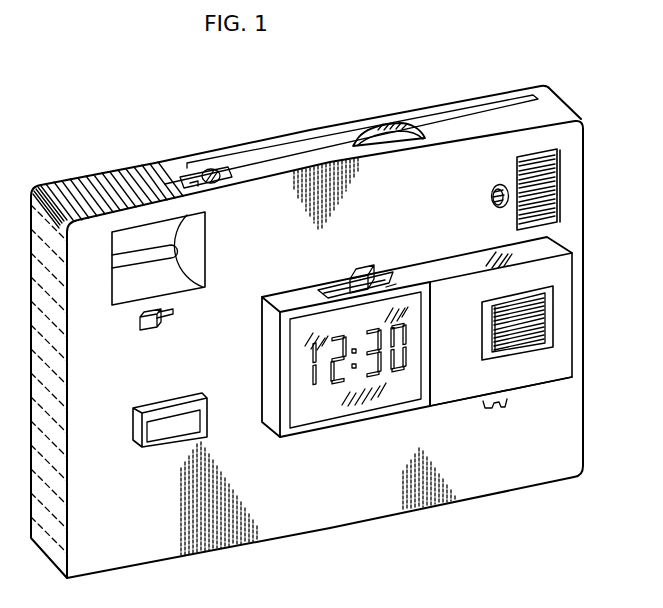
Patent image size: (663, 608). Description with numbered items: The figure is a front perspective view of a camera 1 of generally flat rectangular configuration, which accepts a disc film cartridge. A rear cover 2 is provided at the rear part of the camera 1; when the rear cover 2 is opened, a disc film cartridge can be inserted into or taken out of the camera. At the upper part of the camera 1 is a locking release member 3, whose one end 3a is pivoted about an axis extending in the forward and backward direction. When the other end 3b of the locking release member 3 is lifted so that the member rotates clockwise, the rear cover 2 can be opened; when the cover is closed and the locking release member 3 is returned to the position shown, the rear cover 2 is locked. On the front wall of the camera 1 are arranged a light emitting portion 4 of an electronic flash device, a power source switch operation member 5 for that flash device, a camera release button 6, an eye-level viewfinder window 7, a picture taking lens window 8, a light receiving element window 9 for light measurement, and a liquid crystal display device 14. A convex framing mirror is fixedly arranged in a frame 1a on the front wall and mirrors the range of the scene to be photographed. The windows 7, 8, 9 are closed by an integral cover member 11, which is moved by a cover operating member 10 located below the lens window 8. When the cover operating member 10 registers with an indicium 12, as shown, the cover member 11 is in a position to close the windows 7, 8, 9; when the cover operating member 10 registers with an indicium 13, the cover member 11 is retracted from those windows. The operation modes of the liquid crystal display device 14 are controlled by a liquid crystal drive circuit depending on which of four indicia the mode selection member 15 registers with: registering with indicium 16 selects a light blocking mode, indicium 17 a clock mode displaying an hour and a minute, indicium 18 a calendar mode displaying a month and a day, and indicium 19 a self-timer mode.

The camera 1 is at (57, 183).
The frame 1a is at (272, 414).
The rear cover 2 is at (440, 108).
The locking release member 3 is at (276, 160).
The one end of locking release member 3a is at (381, 128).
The other end of locking release member 3b is at (211, 168).
The light emitting portion 4 is at (110, 297).
The power source switch operation member 5 is at (146, 328).
The camera release button 6 is at (157, 443).
The eye-level viewfinder window 7 is at (557, 210).
The picture taking lens window 8 is at (543, 340).
The light receiving element window 9 is at (503, 207).
The cover operating member 10 is at (499, 401).
The cover member 11 is at (503, 321).
The indicium 12 is at (497, 385).
The indicium 13 is at (455, 391).
The liquid crystal display device 14 is at (378, 401).
The mode selection member 15 is at (357, 267).
The indicium 16 is at (392, 288).
The indicium 17 is at (265, 318).
The indicium 18 is at (350, 304).
The indicium 19 is at (328, 283).